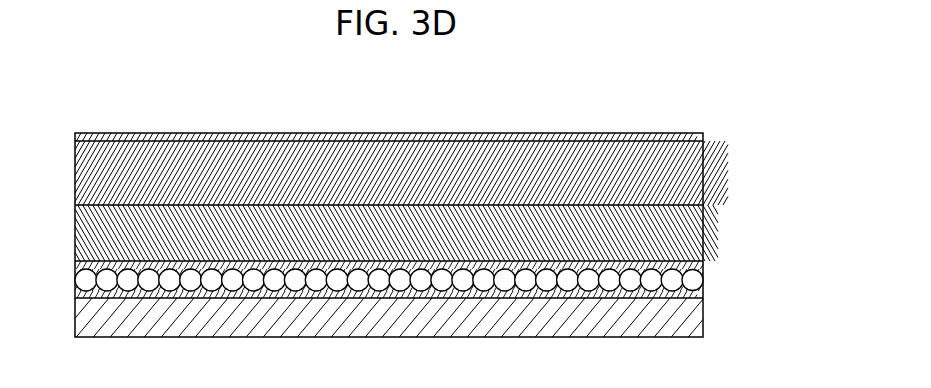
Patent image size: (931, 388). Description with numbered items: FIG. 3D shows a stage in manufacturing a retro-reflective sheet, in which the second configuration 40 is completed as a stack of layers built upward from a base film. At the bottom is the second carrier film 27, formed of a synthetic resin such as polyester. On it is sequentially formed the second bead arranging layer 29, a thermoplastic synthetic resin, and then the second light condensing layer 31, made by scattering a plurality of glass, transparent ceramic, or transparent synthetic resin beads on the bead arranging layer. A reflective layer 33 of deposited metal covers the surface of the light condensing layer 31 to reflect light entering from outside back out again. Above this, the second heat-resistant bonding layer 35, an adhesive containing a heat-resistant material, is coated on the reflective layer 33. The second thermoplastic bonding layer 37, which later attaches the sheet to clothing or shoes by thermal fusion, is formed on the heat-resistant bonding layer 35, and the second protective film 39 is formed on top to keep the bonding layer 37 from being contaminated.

The second configuration 40 is at (726, 117).
The second protective film 39 is at (165, 133).
The second thermoplastic bonding layer 37 is at (699, 160).
The second heat-resistant bonding layer 35 is at (700, 225).
The reflective layer 33 is at (701, 264).
The second light condensing layer 31 is at (705, 279).
The second bead arranging layer 29 is at (702, 294).
The second carrier film 27 is at (702, 325).